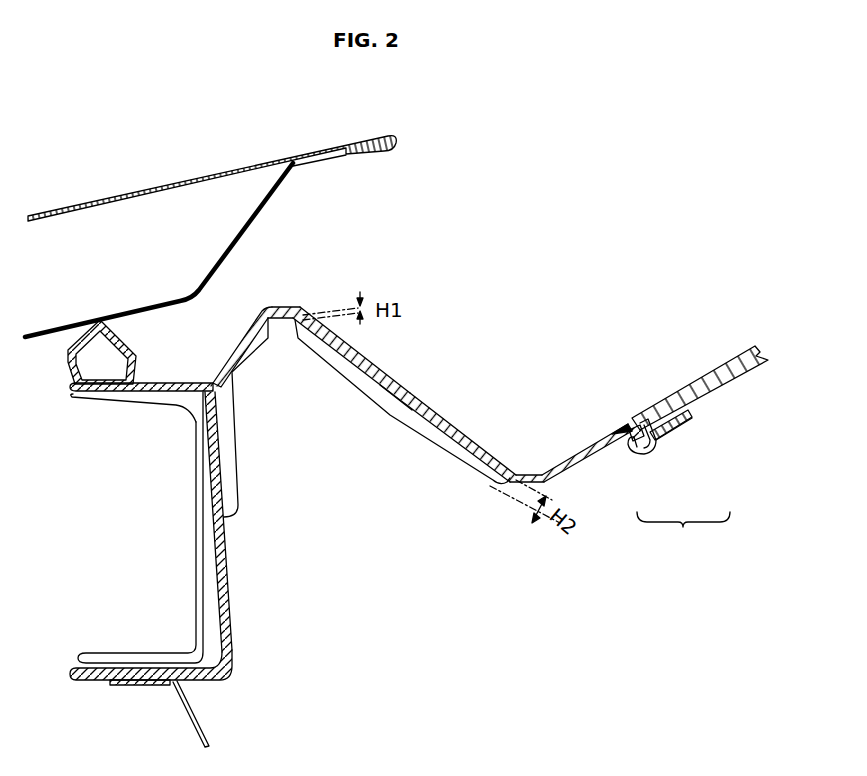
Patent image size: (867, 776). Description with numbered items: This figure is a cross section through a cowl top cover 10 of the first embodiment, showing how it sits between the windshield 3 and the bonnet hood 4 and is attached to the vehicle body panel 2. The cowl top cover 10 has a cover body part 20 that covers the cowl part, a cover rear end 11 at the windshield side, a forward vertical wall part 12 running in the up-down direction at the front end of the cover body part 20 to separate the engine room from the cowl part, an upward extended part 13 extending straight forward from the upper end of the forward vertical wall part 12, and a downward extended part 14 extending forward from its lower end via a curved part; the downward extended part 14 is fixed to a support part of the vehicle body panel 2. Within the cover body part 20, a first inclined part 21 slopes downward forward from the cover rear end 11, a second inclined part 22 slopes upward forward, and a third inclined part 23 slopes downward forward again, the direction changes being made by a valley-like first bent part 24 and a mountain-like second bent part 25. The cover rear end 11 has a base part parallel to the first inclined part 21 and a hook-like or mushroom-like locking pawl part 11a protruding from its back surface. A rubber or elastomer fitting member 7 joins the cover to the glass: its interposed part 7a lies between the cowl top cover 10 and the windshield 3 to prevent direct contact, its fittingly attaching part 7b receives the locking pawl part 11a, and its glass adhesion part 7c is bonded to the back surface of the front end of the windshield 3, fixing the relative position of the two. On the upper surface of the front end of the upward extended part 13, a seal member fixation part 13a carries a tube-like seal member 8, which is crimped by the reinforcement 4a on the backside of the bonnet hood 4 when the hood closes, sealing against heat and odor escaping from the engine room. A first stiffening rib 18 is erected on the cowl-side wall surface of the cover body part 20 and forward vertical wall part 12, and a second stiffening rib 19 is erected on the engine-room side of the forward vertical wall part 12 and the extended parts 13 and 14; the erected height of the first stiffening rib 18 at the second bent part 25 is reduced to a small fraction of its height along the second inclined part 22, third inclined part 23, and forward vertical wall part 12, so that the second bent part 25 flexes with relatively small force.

The vehicle body panel 2 is at (207, 720).
The windshield 3 is at (748, 380).
The bonnet hood 4 is at (192, 176).
The reinforcement 4a is at (258, 212).
The fitting member 7 is at (683, 532).
The interposed part 7a is at (652, 432).
The fittingly attaching part 7b is at (643, 453).
The glass adhesion part 7c is at (683, 424).
The seal member 8 is at (126, 336).
The cowl top cover 10 is at (392, 376).
The cover rear end 11 is at (637, 418).
The locking pawl part 11a is at (623, 427).
The forward vertical wall part 12 is at (223, 583).
The upward extended part 13 is at (183, 391).
The seal member fixation part 13a is at (97, 392).
The downward extended part 14 is at (90, 673).
The first stiffening rib 18 is at (473, 468).
The second stiffening rib 19 is at (210, 545).
The cover body part 20 is at (450, 423).
The first inclined part 21 is at (580, 460).
The second inclined part 22 is at (412, 412).
The third inclined part 23 is at (240, 367).
The first bent part 24 is at (532, 475).
The second bent part 25 is at (282, 307).